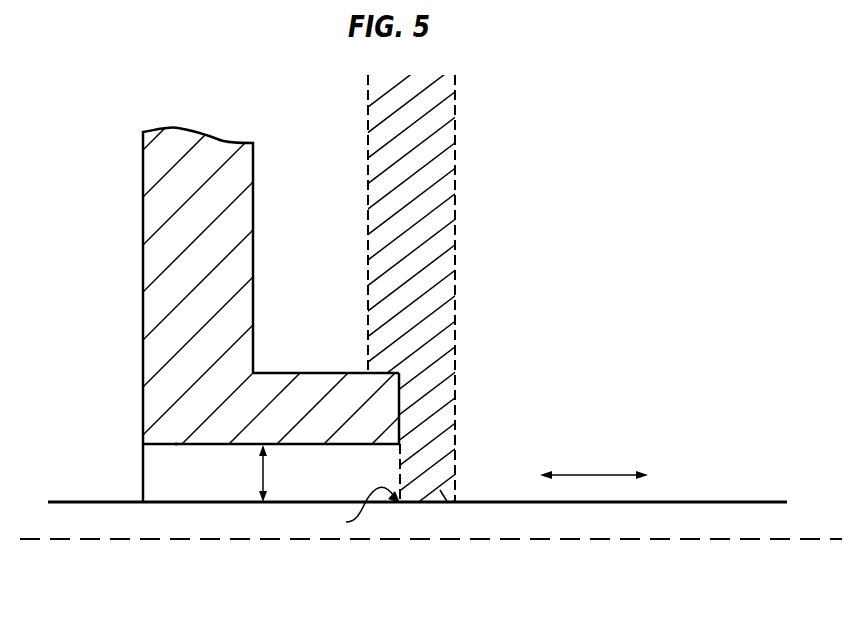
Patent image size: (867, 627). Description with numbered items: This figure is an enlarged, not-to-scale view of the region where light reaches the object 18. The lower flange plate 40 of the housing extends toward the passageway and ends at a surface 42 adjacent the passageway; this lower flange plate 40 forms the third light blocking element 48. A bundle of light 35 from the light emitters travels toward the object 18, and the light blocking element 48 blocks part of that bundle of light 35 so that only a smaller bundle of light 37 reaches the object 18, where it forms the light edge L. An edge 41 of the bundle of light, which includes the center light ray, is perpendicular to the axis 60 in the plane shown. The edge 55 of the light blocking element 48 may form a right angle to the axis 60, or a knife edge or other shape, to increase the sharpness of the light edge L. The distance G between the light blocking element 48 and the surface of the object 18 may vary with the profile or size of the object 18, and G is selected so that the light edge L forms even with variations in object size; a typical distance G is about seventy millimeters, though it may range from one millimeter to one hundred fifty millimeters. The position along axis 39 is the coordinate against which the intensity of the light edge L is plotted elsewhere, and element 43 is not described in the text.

The object 18 is at (718, 526).
The bundle of light 35 is at (440, 178).
The smaller bundle of light 37 is at (440, 487).
The axis 39 is at (598, 474).
The lower flange plate 40 is at (167, 210).
The edge of the bundle of light 41 is at (399, 458).
The surface 42 is at (173, 445).
The contact point 43 is at (424, 503).
The third light blocking element 48 is at (338, 408).
The edge of light blocking element 55 is at (400, 393).
The axis 60 is at (72, 541).
The distance G is at (255, 470).
The light edge L is at (364, 511).